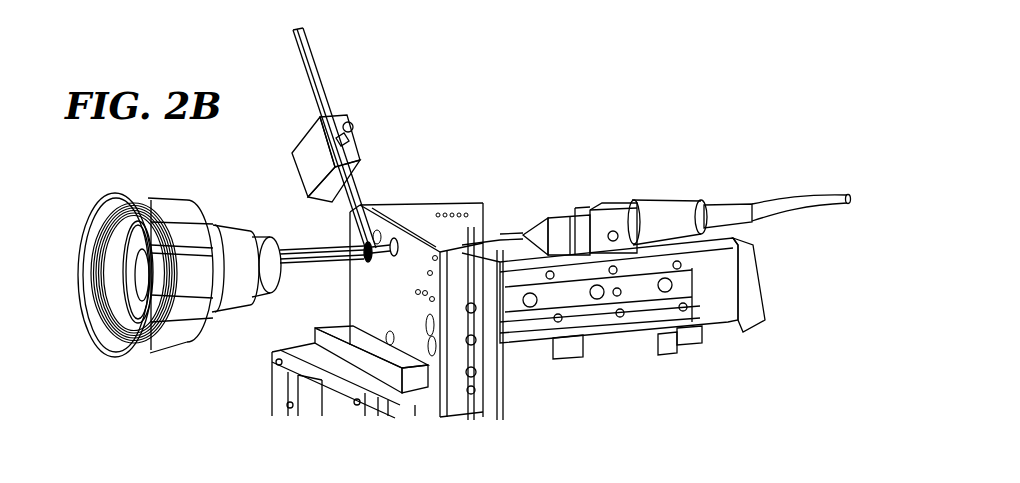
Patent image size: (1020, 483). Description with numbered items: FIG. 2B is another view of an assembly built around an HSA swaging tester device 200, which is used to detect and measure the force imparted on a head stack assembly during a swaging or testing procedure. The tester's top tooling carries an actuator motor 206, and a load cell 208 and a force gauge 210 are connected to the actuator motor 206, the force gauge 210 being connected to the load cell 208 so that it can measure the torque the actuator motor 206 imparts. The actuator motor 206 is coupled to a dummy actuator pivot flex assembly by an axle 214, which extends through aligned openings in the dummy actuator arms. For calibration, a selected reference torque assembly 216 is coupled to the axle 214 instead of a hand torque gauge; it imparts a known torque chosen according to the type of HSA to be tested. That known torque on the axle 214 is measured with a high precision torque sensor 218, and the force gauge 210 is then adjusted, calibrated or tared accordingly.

The HSA swaging tester device 200 is at (596, 114).
The actuator motor 206 is at (132, 347).
The load cell 208 is at (258, 265).
The force gauge 210 is at (258, 265).
The axle 214 is at (292, 246).
The reference torque assembly 216 is at (335, 22).
The high precision torque sensor 218 is at (660, 205).